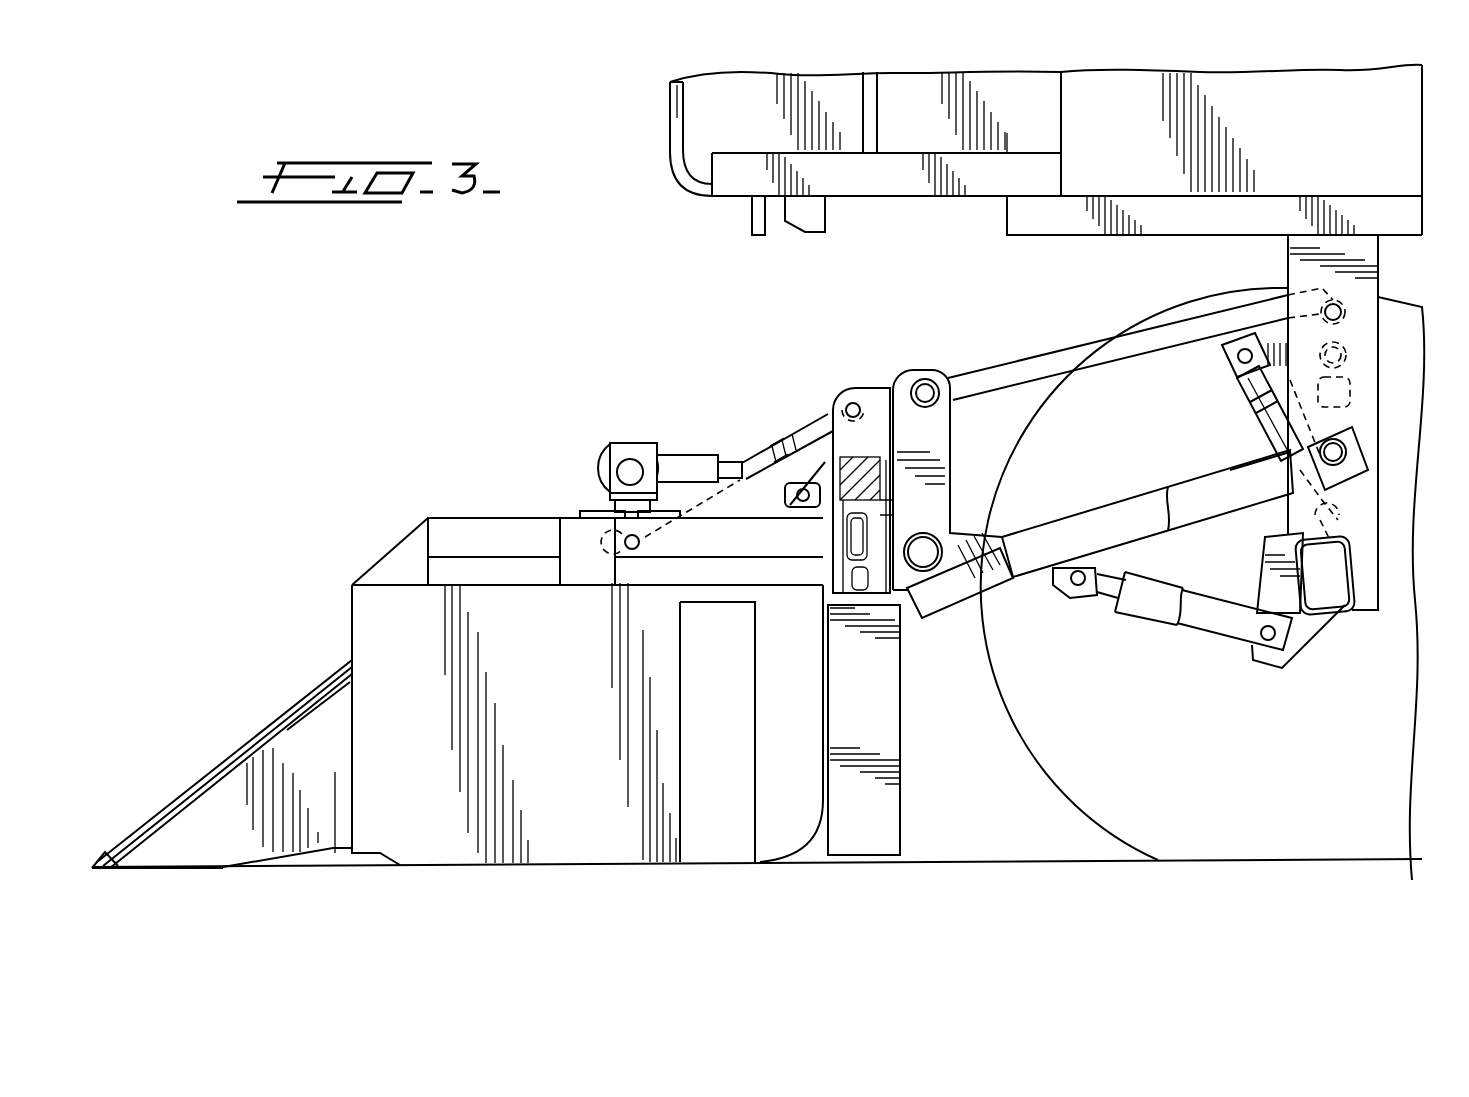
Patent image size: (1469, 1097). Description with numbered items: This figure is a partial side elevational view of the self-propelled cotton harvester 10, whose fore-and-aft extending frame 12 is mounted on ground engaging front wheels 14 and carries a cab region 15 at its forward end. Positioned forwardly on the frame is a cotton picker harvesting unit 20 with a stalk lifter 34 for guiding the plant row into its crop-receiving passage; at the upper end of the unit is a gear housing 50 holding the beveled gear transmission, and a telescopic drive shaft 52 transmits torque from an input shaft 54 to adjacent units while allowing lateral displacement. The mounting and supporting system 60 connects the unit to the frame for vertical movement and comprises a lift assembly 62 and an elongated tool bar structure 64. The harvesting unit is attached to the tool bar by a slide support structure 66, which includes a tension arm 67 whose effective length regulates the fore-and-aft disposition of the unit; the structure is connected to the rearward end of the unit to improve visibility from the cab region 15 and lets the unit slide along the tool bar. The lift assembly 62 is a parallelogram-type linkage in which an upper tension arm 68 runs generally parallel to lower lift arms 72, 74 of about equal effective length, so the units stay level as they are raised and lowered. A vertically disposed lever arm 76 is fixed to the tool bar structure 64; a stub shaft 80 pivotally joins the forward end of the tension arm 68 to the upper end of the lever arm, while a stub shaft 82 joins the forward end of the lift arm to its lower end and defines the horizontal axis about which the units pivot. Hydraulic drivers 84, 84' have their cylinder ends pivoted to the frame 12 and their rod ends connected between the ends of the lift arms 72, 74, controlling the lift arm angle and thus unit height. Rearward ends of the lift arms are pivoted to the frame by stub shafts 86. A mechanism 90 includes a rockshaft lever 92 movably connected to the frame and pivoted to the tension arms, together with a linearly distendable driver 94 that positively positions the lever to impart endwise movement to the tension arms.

The cotton harvester 10 is at (656, 196).
The frame 12 is at (1266, 216).
The front wheel 14 is at (1063, 737).
The cab region 15 is at (712, 123).
The cotton picker harvesting unit 20 is at (530, 711).
The stalk lifter 34 is at (281, 733).
The gear housing 50 is at (611, 458).
The telescopic drive shaft 52 is at (685, 460).
The input shaft 54 is at (953, 530).
The mounting and supporting system 60 is at (905, 361).
The lift assembly 62 is at (1046, 380).
The tool bar structure 64 is at (865, 596).
The slide support structure 66 is at (866, 376).
The tension arm 67 is at (818, 418).
The upper tension arm 68 is at (1100, 366).
The lower lift arm 72 is at (1067, 527).
The lower lift arm 74 is at (1210, 517).
The lever arm 76 is at (928, 446).
The stub shaft 80 is at (940, 381).
The stub shaft 82 is at (960, 581).
The linearly distendable driver 84 is at (1118, 614).
The linearly distendable driver 84' is at (1264, 607).
The stub shaft 86 is at (1323, 467).
The mechanism 90 is at (1247, 420).
The rockshaft lever 92 is at (1237, 380).
The linearly distendable driver 94 is at (1258, 440).